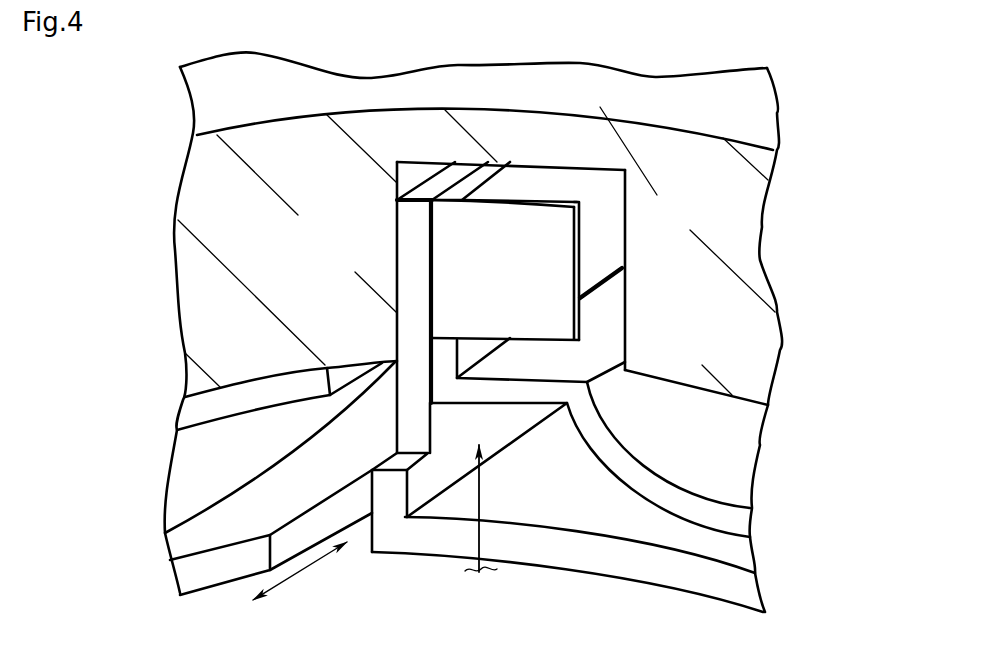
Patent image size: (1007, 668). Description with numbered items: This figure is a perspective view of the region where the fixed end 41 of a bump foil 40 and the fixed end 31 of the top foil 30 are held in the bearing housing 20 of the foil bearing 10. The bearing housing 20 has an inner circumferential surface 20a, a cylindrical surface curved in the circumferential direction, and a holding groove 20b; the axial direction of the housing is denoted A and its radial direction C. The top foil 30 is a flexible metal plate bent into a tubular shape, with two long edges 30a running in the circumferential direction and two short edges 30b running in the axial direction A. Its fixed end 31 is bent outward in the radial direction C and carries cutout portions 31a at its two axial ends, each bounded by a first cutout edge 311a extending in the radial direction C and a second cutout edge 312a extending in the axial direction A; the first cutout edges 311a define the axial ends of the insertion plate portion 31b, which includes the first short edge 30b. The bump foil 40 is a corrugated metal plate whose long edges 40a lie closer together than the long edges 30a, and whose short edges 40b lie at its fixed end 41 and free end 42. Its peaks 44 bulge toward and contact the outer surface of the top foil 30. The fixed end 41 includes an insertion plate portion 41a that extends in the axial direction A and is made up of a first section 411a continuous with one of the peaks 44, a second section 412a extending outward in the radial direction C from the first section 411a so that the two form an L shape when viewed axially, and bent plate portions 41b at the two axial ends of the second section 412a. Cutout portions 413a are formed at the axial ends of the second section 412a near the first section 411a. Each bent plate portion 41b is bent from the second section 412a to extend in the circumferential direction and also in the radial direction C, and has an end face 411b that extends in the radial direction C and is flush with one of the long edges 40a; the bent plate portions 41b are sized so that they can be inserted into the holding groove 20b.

The fixing structure 10 is at (567, 78).
The bearing housing 20 is at (752, 116).
The inner circumferential surface 20a is at (713, 393).
The holding groove 20b is at (573, 168).
The top foil 30 is at (423, 557).
The long edges 30a is at (393, 532).
The short edges 30b is at (460, 176).
The fixed end 31 is at (425, 176).
The cutout portions 31a is at (427, 357).
The insertion plate portion 31b is at (405, 262).
The first cutout edge 311a is at (407, 232).
The second cutout edge 312a is at (395, 463).
The cutout portions 413a is at (428, 332).
The bump foil 40 is at (720, 502).
The long edges 40a is at (607, 463).
The short edges 40b is at (493, 174).
The fixed end 41 is at (504, 194).
The insertion plate portion 41a is at (595, 303).
The bent plate portions 41b is at (562, 256).
The first section 411a is at (560, 365).
The end face 411b is at (543, 223).
The second section 412a is at (477, 352).
The free end 42 is at (268, 402).
The peaks 44 is at (697, 523).
The axial direction A is at (310, 562).
The radial direction C is at (482, 492).